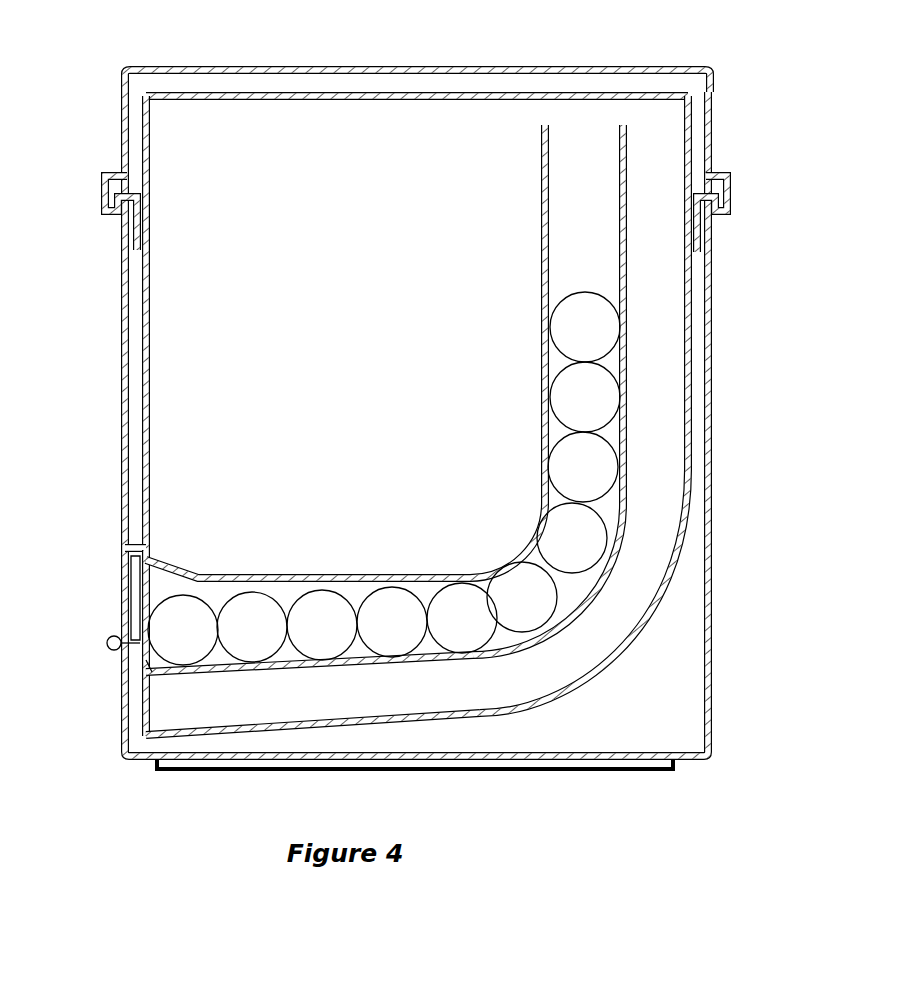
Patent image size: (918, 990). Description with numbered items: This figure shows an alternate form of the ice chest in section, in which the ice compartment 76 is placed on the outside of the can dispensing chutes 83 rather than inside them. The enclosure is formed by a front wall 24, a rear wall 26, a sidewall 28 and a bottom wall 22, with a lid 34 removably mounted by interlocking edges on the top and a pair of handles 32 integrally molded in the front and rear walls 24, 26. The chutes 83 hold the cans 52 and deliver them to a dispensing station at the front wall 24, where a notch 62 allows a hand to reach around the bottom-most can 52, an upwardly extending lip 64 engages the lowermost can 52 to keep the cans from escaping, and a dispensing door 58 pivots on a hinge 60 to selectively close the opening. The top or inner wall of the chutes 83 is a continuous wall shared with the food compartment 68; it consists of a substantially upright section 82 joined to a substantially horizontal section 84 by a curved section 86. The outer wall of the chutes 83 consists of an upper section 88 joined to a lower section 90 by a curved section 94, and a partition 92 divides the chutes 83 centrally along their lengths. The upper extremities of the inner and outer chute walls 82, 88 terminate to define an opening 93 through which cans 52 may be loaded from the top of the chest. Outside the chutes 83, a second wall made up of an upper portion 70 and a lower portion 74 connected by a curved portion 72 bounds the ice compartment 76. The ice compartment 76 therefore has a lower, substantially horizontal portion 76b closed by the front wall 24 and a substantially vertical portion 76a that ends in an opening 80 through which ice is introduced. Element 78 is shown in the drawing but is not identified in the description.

The bottom wall 22 is at (565, 770).
The front wall 24 is at (123, 325).
The rear wall 26 is at (712, 615).
The sidewall 28 is at (289, 312).
The handle 32 is at (101, 188).
The lid 34 is at (410, 68).
The can 52 is at (160, 645).
The dispensing door 58 is at (130, 595).
The hinge 60 is at (106, 643).
The notch 62 is at (168, 583).
The lip 64 is at (150, 650).
The food compartment 68 is at (240, 165).
The upper portion 70 is at (692, 345).
The curved portion 72 is at (617, 655).
The lower portion 74 is at (405, 727).
The ice compartment 76 is at (645, 555).
The substantially vertical portion 76a is at (655, 280).
The lower substantially horizontal portion 76b is at (280, 703).
The lower liner wall 78 is at (170, 705).
The opening 80 is at (657, 130).
The upright section 82 is at (549, 325).
The can dispensing chute 83 is at (607, 155).
The horizontal section 84 is at (333, 575).
The curved section 86 is at (521, 552).
The upper section 88 is at (626, 192).
The lower section 90 is at (323, 662).
The partition 92 is at (559, 233).
The opening 93 is at (581, 130).
The curved section 94 is at (583, 590).